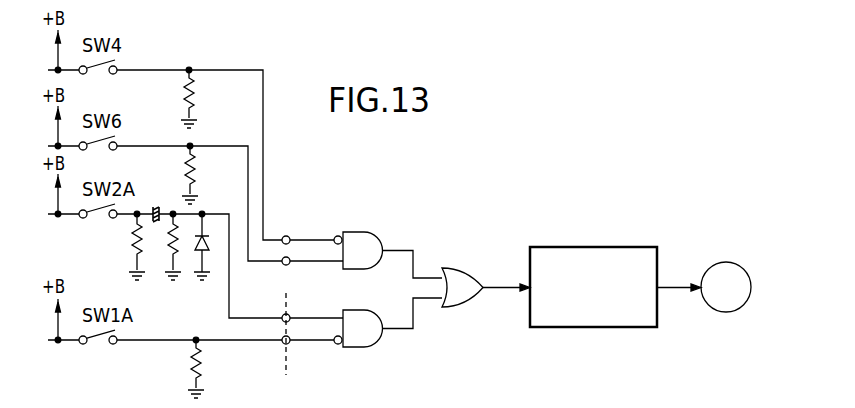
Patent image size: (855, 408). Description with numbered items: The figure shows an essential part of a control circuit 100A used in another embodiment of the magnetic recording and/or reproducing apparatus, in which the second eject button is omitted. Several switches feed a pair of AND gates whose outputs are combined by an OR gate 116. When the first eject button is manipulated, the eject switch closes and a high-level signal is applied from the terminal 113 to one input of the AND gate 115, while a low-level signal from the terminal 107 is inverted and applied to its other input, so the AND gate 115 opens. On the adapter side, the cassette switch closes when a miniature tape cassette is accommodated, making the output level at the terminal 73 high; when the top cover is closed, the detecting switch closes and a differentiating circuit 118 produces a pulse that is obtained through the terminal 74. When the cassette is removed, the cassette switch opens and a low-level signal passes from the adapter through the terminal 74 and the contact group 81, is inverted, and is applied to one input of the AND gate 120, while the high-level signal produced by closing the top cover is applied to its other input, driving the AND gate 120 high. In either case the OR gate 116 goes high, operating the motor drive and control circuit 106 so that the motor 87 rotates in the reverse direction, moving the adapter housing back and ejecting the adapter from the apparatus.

The differentiating circuit 118 is at (128, 238).
The terminal 107 is at (287, 236).
The terminal 113 is at (288, 265).
The terminal 74 is at (283, 315).
The terminal 73 is at (283, 344).
The contact group 81 is at (289, 321).
The control circuit 100A is at (392, 288).
The AND gate 115 is at (367, 232).
The AND gate 120 is at (373, 349).
The OR gate 116 is at (466, 306).
The motor drive and control circuit 106 is at (591, 247).
The motor 87 is at (725, 262).